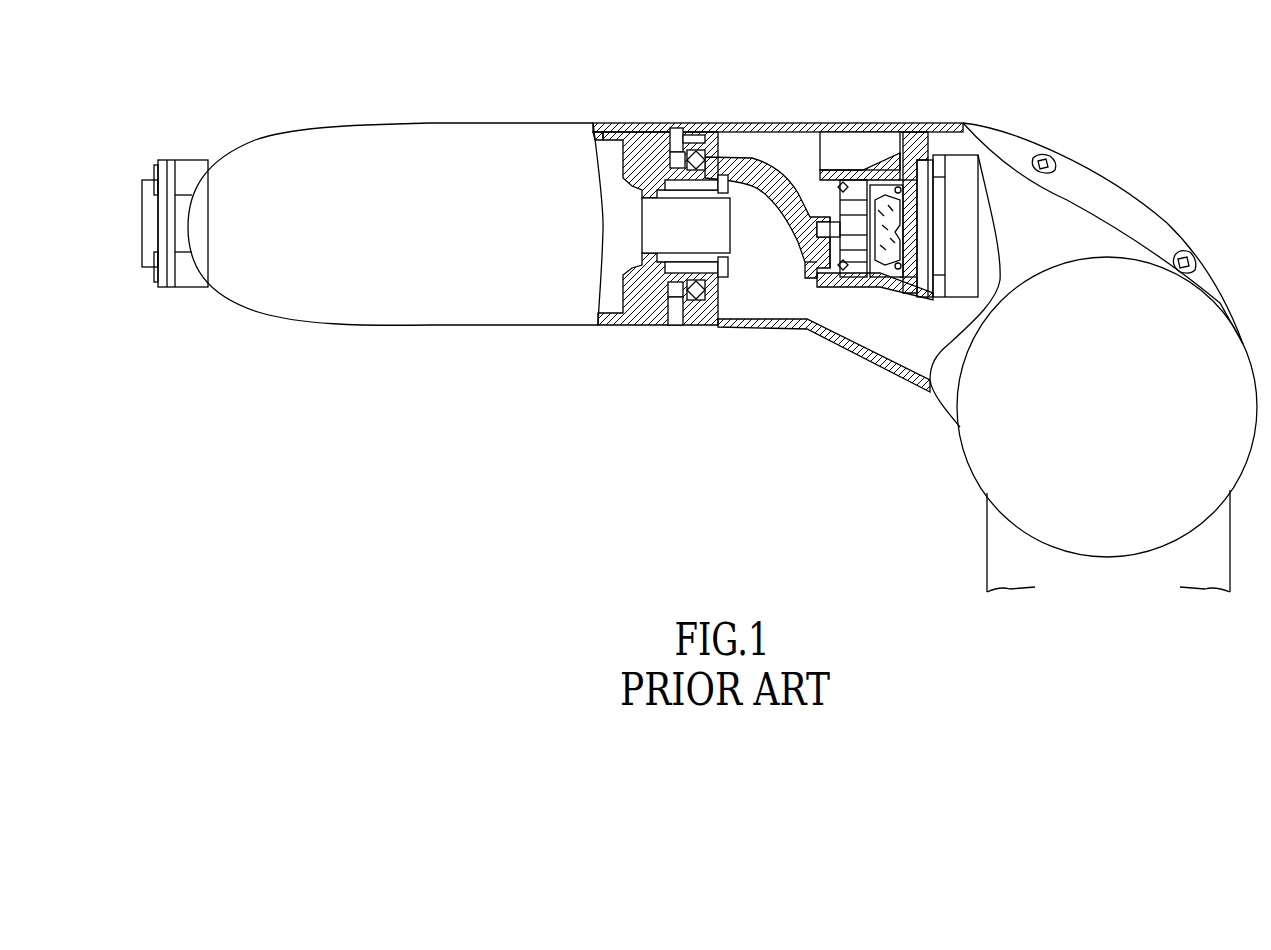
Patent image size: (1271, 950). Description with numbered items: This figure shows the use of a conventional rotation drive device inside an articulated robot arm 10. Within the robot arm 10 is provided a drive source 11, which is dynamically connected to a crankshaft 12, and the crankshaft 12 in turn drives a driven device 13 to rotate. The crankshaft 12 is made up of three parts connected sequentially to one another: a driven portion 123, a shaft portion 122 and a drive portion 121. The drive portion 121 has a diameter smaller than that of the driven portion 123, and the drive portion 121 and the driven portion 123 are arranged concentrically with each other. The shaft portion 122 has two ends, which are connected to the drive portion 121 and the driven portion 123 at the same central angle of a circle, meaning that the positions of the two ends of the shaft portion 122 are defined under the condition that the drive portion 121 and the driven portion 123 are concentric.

The articulated robot arm 10 is at (342, 118).
The drive source 11 is at (887, 290).
The crankshaft 12 is at (757, 175).
The drive portion 121 is at (802, 220).
The shaft portion 122 is at (758, 200).
The driven portion 123 is at (733, 280).
The driven device 13 is at (643, 308).